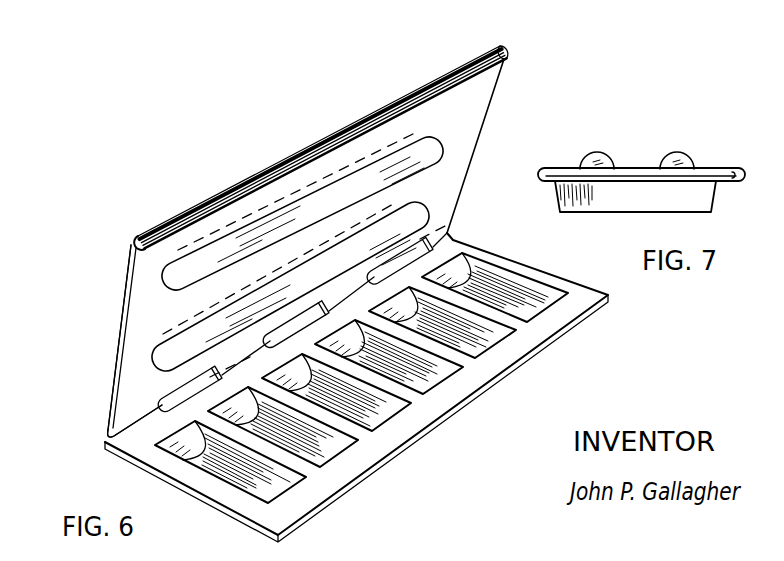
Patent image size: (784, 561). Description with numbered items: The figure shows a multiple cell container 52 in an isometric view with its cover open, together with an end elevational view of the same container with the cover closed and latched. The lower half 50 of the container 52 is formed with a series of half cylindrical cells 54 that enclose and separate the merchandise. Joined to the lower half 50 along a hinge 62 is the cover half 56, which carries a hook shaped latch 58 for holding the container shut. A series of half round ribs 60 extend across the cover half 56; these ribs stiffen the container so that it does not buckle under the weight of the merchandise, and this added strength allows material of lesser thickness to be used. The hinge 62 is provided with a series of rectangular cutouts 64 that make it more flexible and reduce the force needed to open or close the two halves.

In FIG. 6, the lower half 50 is at (548, 325).
In FIG. 6, the container 52 is at (142, 330).
In FIG. 6, the half cylindrical cells 54 is at (443, 383).
In FIG. 6, the cover half 56 is at (130, 282).
In FIG. 6, the hook shaped latch 58 is at (200, 213).
In FIG. 6, the half round ribs 60 is at (363, 183).
In FIG. 7, the half round ribs 60 is at (673, 155).
In FIG. 6, the hinge 62 is at (112, 423).
In FIG. 6, the rectangular cutouts 64 is at (457, 237).